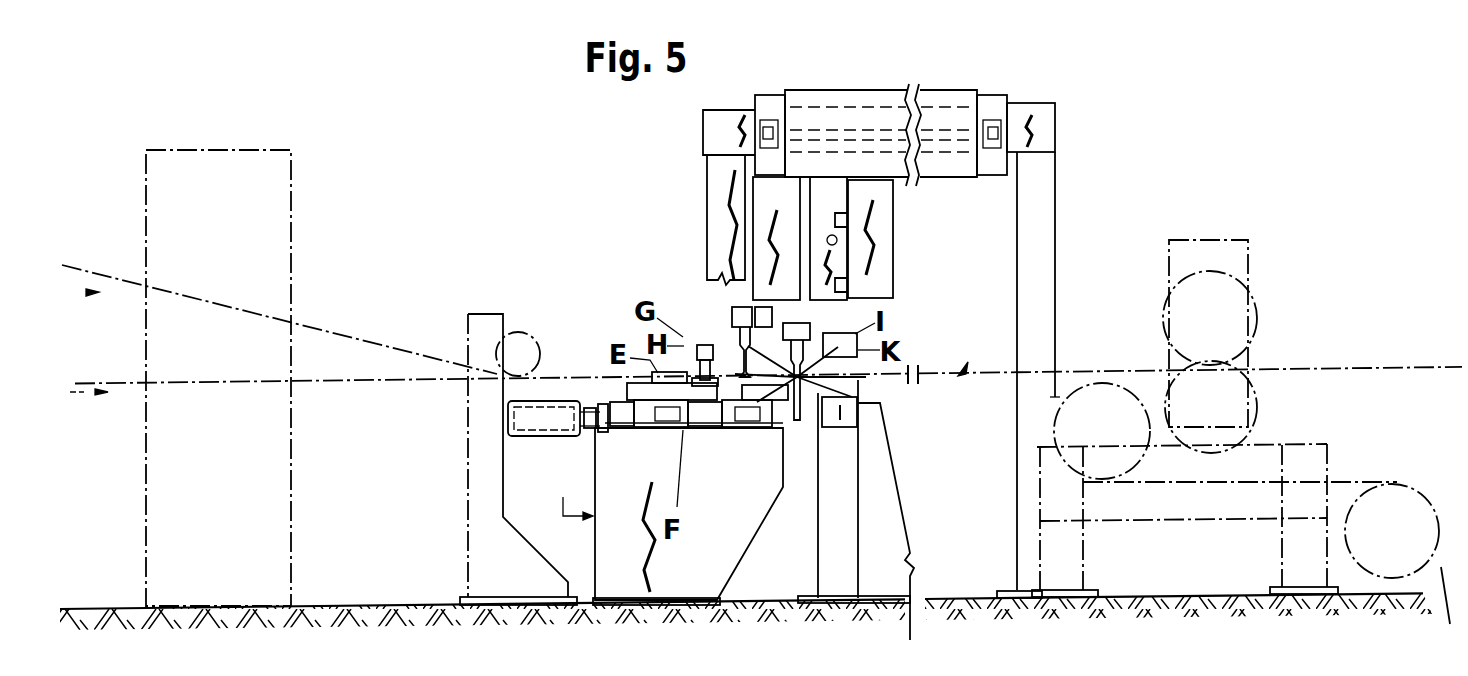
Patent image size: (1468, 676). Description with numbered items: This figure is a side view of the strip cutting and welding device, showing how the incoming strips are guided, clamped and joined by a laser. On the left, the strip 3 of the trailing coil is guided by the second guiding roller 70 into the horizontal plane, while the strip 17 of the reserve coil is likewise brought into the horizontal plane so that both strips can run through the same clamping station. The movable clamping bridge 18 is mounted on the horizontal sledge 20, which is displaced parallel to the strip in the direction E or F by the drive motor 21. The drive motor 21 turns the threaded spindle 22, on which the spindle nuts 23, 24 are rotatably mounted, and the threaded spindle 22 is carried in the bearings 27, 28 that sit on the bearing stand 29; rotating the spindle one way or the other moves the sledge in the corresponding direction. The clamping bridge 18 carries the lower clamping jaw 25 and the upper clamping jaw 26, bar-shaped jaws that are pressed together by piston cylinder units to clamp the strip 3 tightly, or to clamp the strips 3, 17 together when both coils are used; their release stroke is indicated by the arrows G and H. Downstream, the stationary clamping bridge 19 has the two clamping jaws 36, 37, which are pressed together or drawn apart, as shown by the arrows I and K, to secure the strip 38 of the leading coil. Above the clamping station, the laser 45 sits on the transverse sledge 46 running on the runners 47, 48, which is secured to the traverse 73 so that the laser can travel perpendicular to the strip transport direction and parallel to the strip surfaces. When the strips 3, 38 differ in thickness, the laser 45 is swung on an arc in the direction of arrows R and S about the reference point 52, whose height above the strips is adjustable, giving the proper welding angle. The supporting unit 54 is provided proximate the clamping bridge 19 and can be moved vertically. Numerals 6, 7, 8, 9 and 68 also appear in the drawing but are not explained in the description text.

The strip 3 is at (317, 335).
The strip 17 is at (323, 381).
The second guiding roller 70 is at (526, 338).
The clamping bridge 18 is at (573, 493).
The drive motor 21 is at (545, 437).
The bearing 28 is at (597, 408).
The bearing stand 29 is at (600, 549).
The horizontal sledge 20 is at (644, 430).
The spindle nut 23 is at (622, 428).
The threaded spindle 22 is at (658, 430).
The spindle nut 24 is at (701, 430).
The lower clamping jaw 25 is at (737, 412).
The bearing 27 is at (780, 430).
The laser 45 is at (737, 328).
The clamping jaw 36 is at (807, 362).
The upper clamping jaw 26 is at (742, 370).
The clamping jaw 37 is at (820, 376).
The supporting unit 54 is at (816, 432).
The clamping bridge 19 is at (893, 548).
The reference point 52 is at (675, 292).
The runner 47 is at (852, 197).
The transverse sledge 46 is at (750, 283).
The runner 48 is at (850, 281).
The traverse 73 is at (885, 233).
The strip 38 is at (963, 370).
The take-off roller and frame 8 is at (1118, 395).
The upper pinch roller 6 is at (1240, 300).
The lower pinch roller 7 is at (1257, 400).
The winding roller 9 is at (1397, 494).
The floor 68 is at (359, 606).